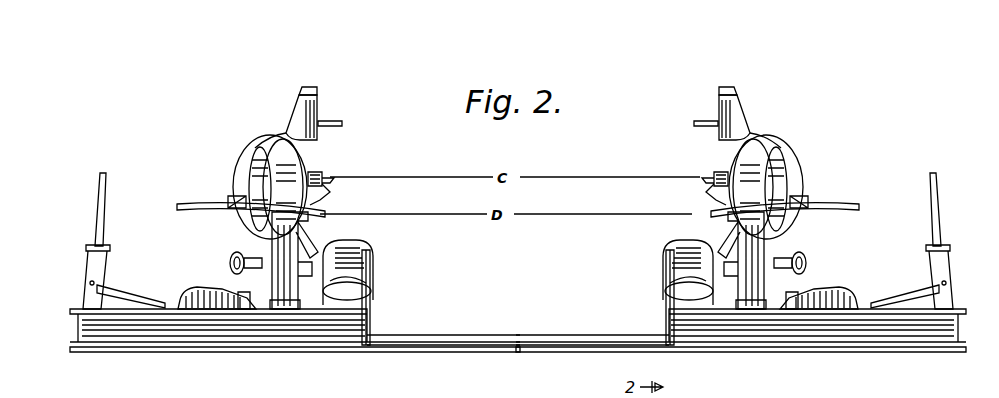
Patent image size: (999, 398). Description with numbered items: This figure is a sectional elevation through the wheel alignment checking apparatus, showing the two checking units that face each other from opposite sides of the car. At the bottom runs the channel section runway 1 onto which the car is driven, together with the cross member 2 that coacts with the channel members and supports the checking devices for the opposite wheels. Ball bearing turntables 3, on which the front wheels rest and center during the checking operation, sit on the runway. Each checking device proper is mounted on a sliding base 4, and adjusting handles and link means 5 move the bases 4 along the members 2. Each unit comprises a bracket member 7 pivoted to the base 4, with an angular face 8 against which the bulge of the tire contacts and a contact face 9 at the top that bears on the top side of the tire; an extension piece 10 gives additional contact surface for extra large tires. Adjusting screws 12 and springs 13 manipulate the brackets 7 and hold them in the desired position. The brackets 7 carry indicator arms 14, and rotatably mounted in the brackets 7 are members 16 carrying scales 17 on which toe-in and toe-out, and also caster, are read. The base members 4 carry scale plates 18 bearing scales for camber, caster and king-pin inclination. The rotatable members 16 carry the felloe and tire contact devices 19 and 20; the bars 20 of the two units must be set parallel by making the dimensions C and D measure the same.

The channel section runway 1 is at (370, 323).
The cross member 2 is at (316, 338).
The ball bearing turntable 3 is at (371, 281).
The sliding base 4 is at (203, 291).
The adjusting handle and link means 5 is at (94, 270).
The bracket member 7 is at (298, 248).
The angular face 8 is at (314, 280).
The contact face 9 is at (318, 110).
The extension piece 10 is at (318, 94).
The adjusting screw 12 is at (244, 297).
The spring 13 is at (281, 300).
The indicator arm 14 is at (236, 209).
The rotatable member 16 is at (304, 164).
The scale 17 is at (192, 214).
The scale plate 18 is at (258, 254).
The felloe and tire contact device 19 is at (343, 124).
The felloe and tire contact device 20 is at (328, 170).